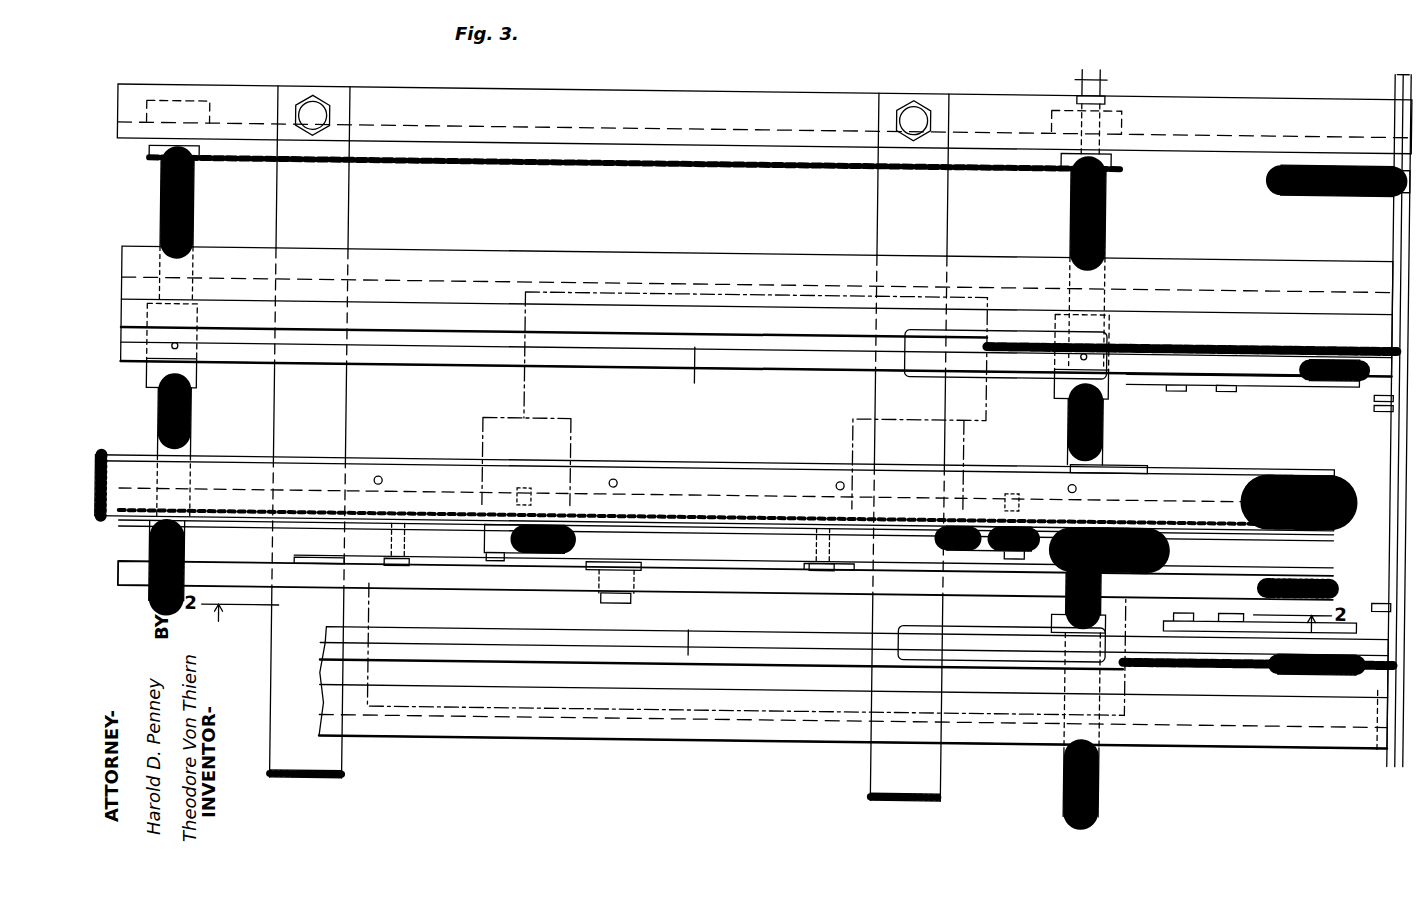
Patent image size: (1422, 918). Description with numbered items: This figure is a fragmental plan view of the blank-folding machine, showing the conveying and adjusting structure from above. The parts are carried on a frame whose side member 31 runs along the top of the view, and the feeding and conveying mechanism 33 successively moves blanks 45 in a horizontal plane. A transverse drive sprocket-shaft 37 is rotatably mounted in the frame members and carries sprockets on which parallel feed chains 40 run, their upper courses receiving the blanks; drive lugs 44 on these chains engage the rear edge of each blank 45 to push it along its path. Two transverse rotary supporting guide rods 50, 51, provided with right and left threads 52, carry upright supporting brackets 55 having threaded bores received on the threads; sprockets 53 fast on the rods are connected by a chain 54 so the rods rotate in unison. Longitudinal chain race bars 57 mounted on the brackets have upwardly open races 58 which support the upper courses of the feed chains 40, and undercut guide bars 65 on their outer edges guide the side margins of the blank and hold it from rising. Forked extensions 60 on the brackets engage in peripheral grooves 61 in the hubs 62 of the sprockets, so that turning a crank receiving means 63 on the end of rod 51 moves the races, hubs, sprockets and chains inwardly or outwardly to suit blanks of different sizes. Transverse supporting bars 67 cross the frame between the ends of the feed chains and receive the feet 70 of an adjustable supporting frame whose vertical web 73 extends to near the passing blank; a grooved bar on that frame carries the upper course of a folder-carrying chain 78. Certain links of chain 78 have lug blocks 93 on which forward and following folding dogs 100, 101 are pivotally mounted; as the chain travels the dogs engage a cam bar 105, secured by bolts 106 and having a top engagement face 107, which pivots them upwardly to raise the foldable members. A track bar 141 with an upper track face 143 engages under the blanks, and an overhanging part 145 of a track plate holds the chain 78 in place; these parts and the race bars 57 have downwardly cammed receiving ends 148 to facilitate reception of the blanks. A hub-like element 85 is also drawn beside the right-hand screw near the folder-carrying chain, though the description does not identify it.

The frame side member 31 is at (764, 119).
The feeding and conveying mechanism 33 is at (1382, 680).
The drive sprocket-shaft 37 is at (1394, 452).
The feed chain 40 is at (1338, 330).
The drive lug 44 is at (1134, 690).
The blank 45 is at (990, 400).
The rotary supporting guide rod 50 is at (196, 212).
The rotary supporting guide rod 51 is at (1110, 200).
The right and left threads 52 is at (1105, 495).
The sprocket 53 is at (150, 150).
The chain 54 is at (1020, 161).
The upright supporting bracket 55 is at (240, 368).
The chain race bar 57 is at (668, 365).
The race 58 is at (754, 519).
The forked extension 60 is at (1292, 376).
The peripheral groove 61 is at (1384, 388).
The hub 62 is at (1386, 398).
The crank receiving means 63 is at (1102, 64).
The undercut guide bar 65 is at (680, 228).
The transverse supporting bar 67 is at (350, 181).
The foot 70 is at (340, 562).
The vertical web 73 is at (704, 440).
The folder-carrying chain 78 is at (746, 488).
The knurled hub 85 is at (1156, 528).
The lug block 93 is at (534, 492).
The forward folding dog 100 is at (490, 537).
The following folding dog 101 is at (1026, 538).
The cam bar 105 is at (768, 561).
The bolt 106 is at (400, 552).
The top engagement face 107 is at (813, 548).
The track bar 141 is at (590, 586).
The upper track face 143 is at (698, 580).
The overhanging part 145 is at (786, 461).
The downwardly cammed receiving end 148 is at (1352, 370).